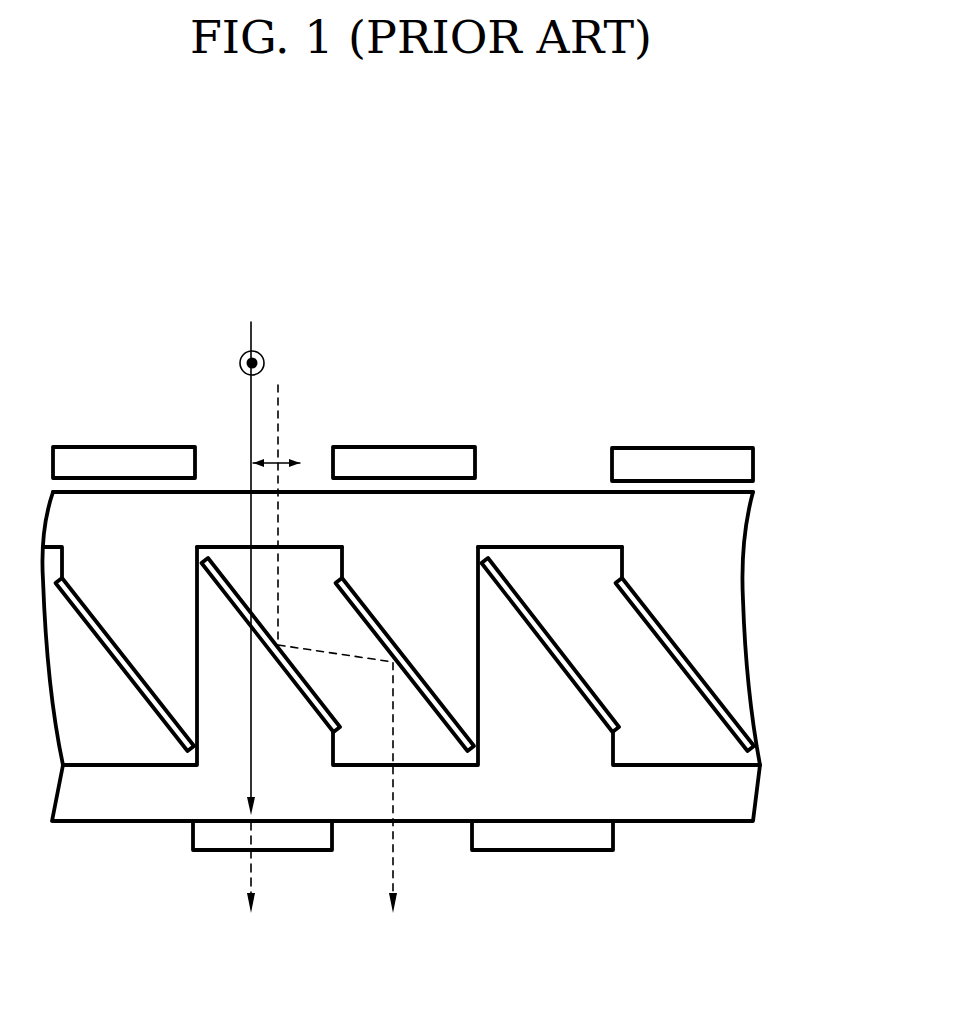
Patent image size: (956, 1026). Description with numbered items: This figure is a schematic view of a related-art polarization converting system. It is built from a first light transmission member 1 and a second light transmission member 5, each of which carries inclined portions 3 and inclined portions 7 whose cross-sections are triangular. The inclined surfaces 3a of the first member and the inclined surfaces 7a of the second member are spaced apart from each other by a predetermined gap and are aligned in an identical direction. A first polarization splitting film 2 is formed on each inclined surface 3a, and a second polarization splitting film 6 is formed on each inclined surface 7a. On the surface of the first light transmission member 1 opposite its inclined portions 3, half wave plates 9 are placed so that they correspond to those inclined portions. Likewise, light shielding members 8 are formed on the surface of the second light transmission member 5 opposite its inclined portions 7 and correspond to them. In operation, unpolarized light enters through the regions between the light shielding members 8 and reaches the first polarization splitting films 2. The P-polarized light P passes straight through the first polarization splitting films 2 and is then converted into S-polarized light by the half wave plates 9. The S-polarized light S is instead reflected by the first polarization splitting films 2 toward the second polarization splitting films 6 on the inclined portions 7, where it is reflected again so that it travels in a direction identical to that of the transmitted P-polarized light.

The first light transmission member 1 is at (702, 832).
The first polarization splitting film 2 is at (263, 623).
The inclined portion 3 is at (563, 718).
The inclined surface 3a is at (560, 700).
The second light transmission member 5 is at (755, 495).
The second polarization splitting film 6 is at (372, 638).
The inclined portion 7 is at (692, 597).
The inclined surface 7a is at (672, 640).
The light shielding member 8 is at (110, 453).
The half wave plate 9 is at (217, 843).
The P-polarized light P is at (248, 415).
The S-polarized light S is at (281, 400).